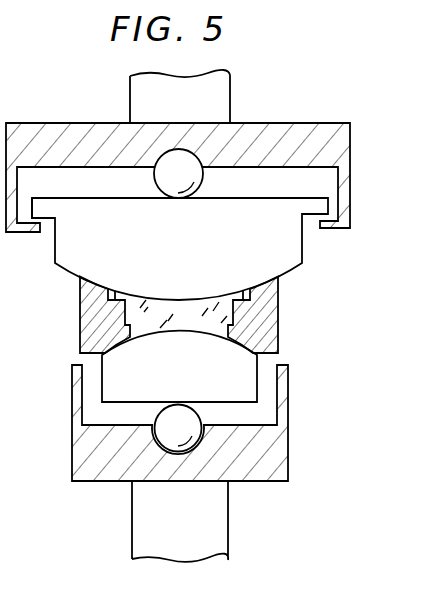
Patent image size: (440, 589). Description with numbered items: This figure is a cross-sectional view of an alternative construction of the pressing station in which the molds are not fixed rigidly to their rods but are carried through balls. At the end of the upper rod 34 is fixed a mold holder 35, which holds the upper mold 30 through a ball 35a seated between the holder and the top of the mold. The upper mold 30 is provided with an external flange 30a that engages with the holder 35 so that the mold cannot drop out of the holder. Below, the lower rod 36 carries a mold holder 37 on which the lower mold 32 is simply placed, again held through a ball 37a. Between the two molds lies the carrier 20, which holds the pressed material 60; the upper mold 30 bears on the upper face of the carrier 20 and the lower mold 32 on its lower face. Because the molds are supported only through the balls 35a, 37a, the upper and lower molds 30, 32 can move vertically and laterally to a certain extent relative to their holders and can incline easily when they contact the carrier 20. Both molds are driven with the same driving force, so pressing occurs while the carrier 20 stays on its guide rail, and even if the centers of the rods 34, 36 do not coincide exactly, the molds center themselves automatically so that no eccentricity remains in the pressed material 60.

The carrier 20 is at (278, 298).
The upper mold 30 is at (290, 243).
The external flange 30a is at (46, 212).
The lower mold 32 is at (252, 366).
The rod 34 is at (231, 86).
The mold holder 35 is at (351, 175).
The ball 35a is at (193, 178).
The rod 36 is at (222, 512).
The mold holder 37 is at (268, 443).
The ball 37a is at (170, 424).
The pressed material 60 is at (226, 316).